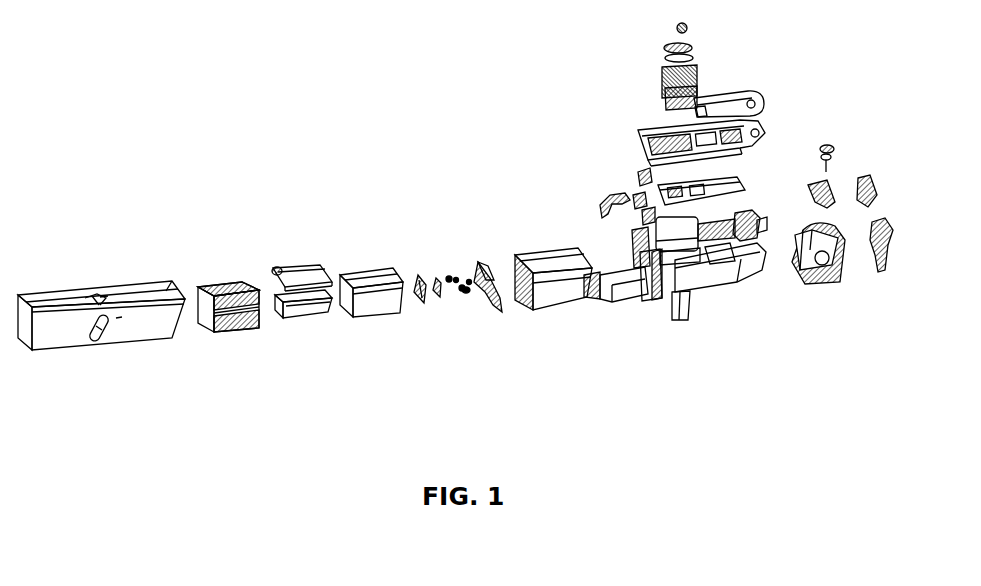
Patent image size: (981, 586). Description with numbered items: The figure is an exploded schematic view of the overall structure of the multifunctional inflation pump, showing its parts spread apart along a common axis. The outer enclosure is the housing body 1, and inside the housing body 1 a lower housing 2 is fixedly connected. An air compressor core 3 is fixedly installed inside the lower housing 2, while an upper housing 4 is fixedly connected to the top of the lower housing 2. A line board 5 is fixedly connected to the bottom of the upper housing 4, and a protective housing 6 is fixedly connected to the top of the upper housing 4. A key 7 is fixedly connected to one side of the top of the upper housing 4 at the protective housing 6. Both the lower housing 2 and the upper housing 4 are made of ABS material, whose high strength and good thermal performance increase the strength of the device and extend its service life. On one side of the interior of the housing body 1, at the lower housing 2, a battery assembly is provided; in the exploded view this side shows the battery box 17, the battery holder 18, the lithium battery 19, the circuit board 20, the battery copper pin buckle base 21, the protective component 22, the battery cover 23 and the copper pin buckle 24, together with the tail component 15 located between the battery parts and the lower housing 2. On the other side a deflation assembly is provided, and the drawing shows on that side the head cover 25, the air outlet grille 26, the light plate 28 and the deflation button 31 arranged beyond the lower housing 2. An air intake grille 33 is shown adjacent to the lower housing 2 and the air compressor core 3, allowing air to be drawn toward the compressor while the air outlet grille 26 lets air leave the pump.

The housing body 1 is at (57, 302).
The lower housing 2 is at (747, 277).
The air compressor core 3 is at (648, 290).
The upper housing 4 is at (765, 125).
The line board 5 is at (658, 187).
The protective housing 6 is at (728, 107).
The key 7 is at (663, 93).
The tail component 15 is at (555, 288).
The battery box 17 is at (363, 282).
The battery holder 18 is at (227, 325).
The lithium battery 19 is at (310, 312).
The circuit board 20 is at (305, 275).
The battery copper pin buckle base 21 is at (415, 277).
The protective component 22 is at (433, 297).
The battery cover 23 is at (483, 265).
The copper pin buckle 24 is at (470, 293).
The head cover 25 is at (817, 285).
The air outlet grille 26 is at (882, 272).
The light plate 28 is at (870, 188).
The deflation button 31 is at (830, 177).
The air intake grille 33 is at (600, 203).